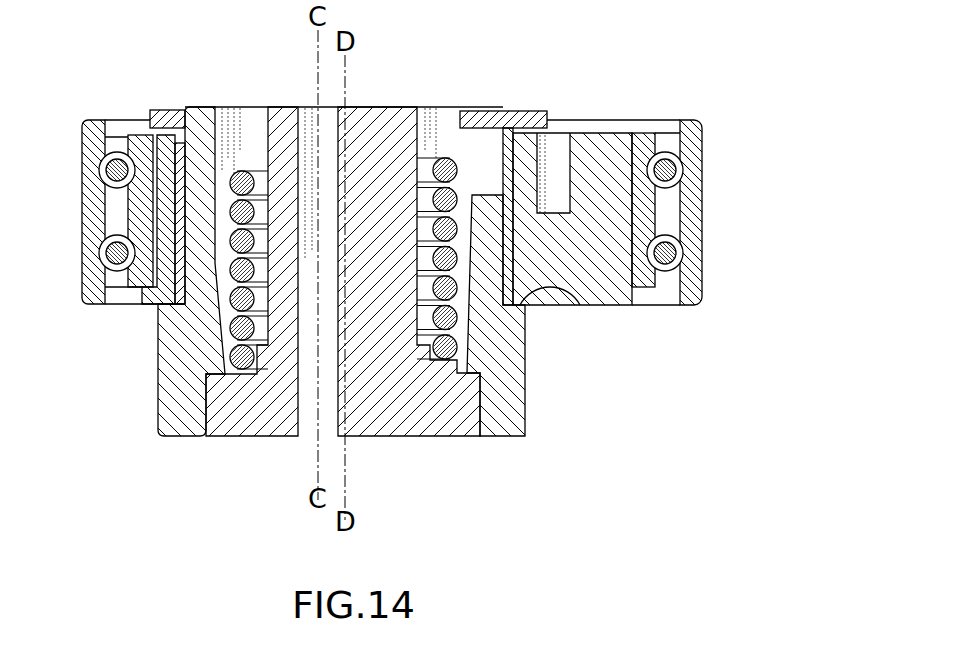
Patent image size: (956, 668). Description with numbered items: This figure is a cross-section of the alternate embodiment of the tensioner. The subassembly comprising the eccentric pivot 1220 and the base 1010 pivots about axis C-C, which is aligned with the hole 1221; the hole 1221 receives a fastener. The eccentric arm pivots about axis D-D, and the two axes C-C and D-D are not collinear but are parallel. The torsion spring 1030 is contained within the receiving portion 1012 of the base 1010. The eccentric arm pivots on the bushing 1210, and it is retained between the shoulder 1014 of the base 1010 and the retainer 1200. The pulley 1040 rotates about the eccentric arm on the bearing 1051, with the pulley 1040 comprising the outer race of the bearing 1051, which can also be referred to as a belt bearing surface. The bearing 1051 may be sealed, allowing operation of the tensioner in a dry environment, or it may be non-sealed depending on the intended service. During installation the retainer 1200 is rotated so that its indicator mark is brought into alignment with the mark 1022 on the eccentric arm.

The base 1010 is at (527, 392).
The receiving portion 1012 is at (243, 96).
The shoulder 1014 is at (535, 292).
The mark 1022 is at (612, 155).
The torsion spring 1030 is at (233, 272).
The pulley 1040 is at (703, 234).
The bearing 1051 is at (683, 173).
The retainer 1200 is at (538, 112).
The bushing 1210 is at (503, 163).
The eccentric pivot 1220 is at (442, 437).
The hole 1221 is at (303, 410).